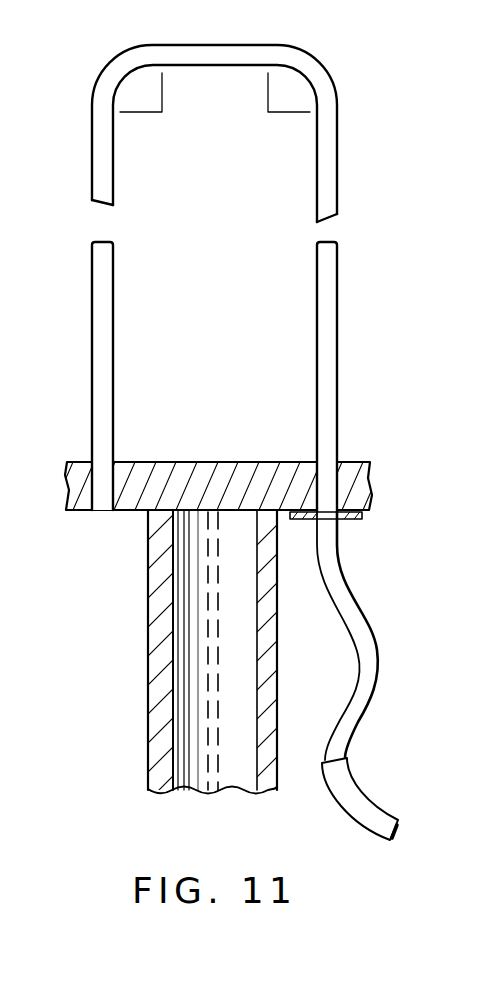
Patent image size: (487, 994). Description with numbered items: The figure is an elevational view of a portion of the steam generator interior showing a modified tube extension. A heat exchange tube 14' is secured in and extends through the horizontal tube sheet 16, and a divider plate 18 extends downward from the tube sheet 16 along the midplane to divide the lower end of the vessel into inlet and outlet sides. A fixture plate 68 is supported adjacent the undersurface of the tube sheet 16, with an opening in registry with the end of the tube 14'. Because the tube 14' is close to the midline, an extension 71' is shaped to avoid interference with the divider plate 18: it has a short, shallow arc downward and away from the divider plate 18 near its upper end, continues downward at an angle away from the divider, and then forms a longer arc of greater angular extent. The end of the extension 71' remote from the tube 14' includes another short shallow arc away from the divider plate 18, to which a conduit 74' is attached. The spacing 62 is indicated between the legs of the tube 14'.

The tube 14' is at (248, 278).
The tube sheet 16 is at (80, 462).
The divider plate 18 is at (207, 677).
The leg spacing 62 is at (162, 112).
The fixture plate 68 is at (357, 519).
The extension 71' is at (365, 636).
The conduit 74' is at (376, 799).